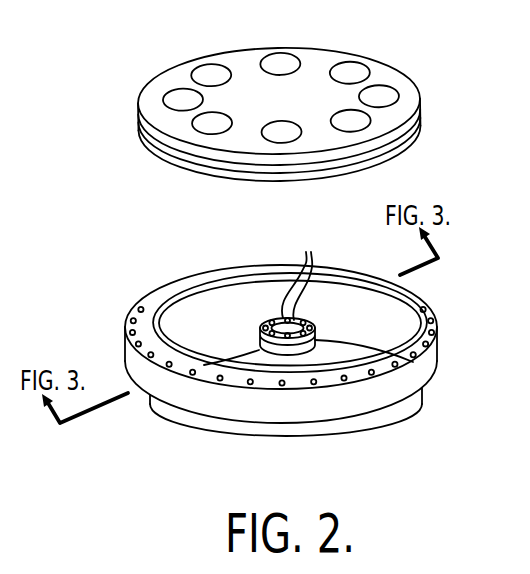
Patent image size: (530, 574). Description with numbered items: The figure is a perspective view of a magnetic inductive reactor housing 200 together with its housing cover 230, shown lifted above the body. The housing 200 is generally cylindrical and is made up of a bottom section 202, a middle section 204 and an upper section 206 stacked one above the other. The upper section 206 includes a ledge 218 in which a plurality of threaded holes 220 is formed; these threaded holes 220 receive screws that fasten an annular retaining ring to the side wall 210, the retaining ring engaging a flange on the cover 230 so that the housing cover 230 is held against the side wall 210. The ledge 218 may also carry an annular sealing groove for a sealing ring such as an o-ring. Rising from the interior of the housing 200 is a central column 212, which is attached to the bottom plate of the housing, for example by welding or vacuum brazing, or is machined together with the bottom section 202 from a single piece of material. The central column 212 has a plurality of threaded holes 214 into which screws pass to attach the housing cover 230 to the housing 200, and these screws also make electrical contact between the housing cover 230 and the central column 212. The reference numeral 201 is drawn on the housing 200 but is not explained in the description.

The magnetic inductive reactor housing 200 is at (126, 386).
The housing 201 is at (328, 402).
The bottom section 202 is at (249, 427).
The middle section 204 is at (416, 373).
The upper section 206 is at (238, 360).
The side wall 210 is at (191, 322).
The central column 212 is at (260, 352).
The threaded holes 214 is at (311, 272).
The ledge 218 is at (436, 333).
The threaded holes 220 is at (348, 381).
The housing cover 230 is at (153, 80).